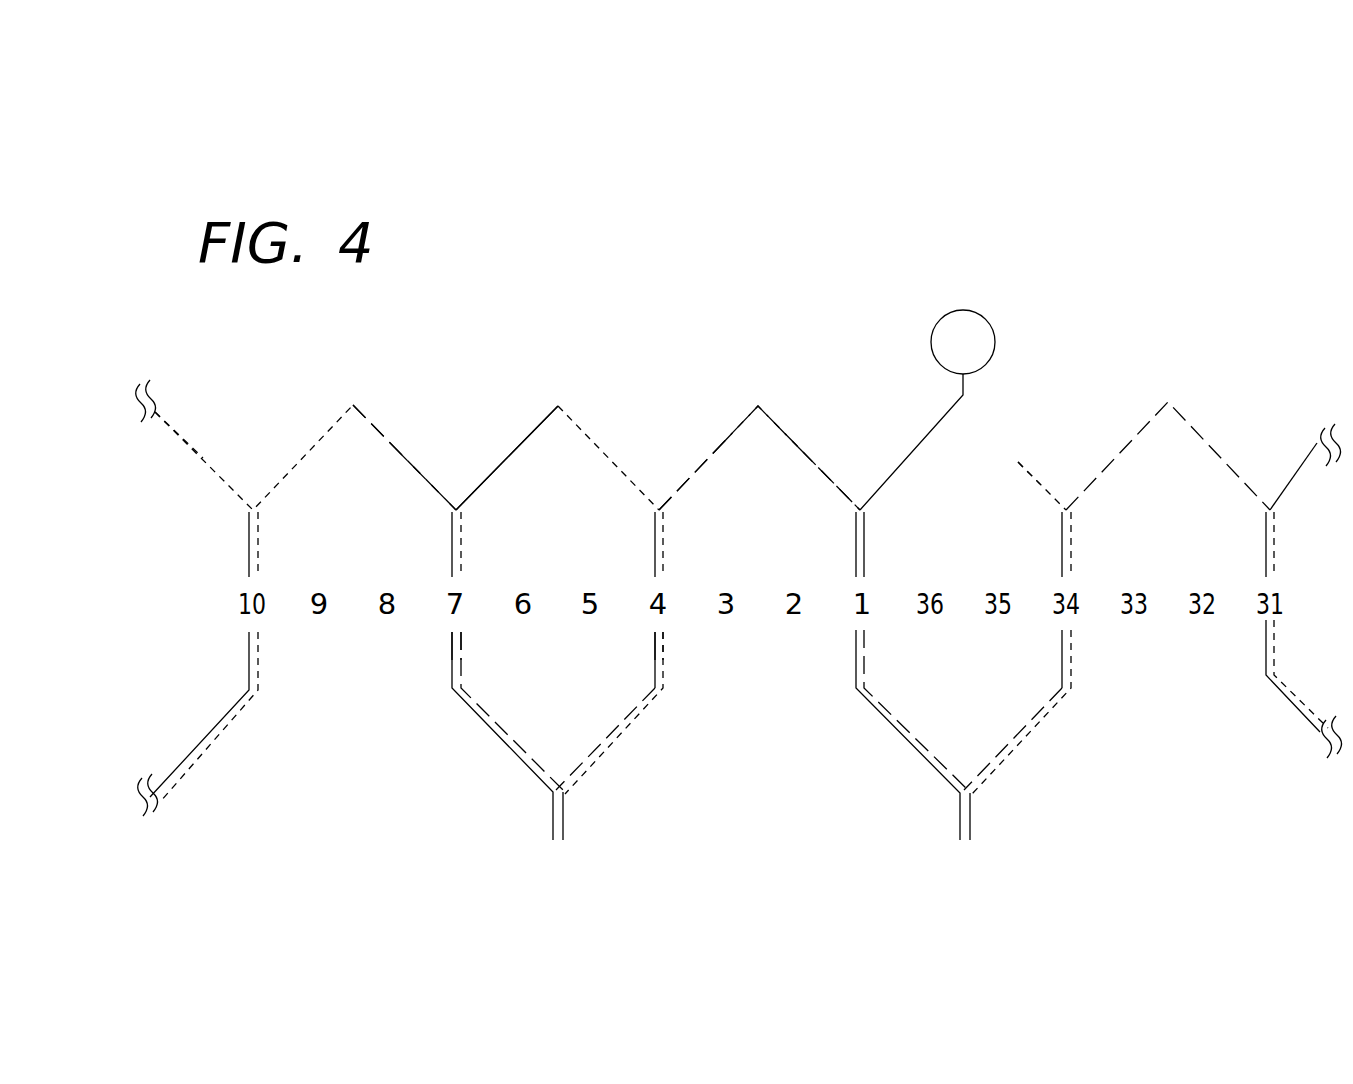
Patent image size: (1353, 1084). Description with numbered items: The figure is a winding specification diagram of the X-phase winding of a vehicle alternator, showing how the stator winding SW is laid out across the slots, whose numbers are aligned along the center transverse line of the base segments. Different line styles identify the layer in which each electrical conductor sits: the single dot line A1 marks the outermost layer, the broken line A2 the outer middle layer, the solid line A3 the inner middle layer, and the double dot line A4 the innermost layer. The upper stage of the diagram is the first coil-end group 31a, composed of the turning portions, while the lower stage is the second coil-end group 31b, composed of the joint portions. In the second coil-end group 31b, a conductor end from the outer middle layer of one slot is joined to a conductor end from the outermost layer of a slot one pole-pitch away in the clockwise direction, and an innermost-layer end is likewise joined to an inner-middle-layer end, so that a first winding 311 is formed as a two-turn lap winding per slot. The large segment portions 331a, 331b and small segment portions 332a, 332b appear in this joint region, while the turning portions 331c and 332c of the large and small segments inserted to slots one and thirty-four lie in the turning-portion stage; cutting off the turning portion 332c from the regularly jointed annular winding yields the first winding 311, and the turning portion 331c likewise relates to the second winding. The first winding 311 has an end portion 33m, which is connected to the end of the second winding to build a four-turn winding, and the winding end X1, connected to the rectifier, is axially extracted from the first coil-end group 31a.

The first coil-end group 31a is at (113, 370).
The second coil-end group 31b is at (113, 723).
The large segment portion 331a is at (653, 660).
The large segment portion 331b is at (463, 636).
The turning portion 331c is at (353, 405).
The small segment portion 332a is at (452, 657).
The small segment portion 332b is at (667, 657).
The turning portion 332c is at (558, 406).
The first winding 311 is at (803, 390).
The stator winding SW is at (742, 368).
The winding end X1 is at (963, 342).
The end portion 33m is at (1030, 470).
The single dot line A1 is at (420, 456).
The broken line A2 is at (203, 458).
The solid line A3 is at (518, 452).
The double dot line A4 is at (687, 483).